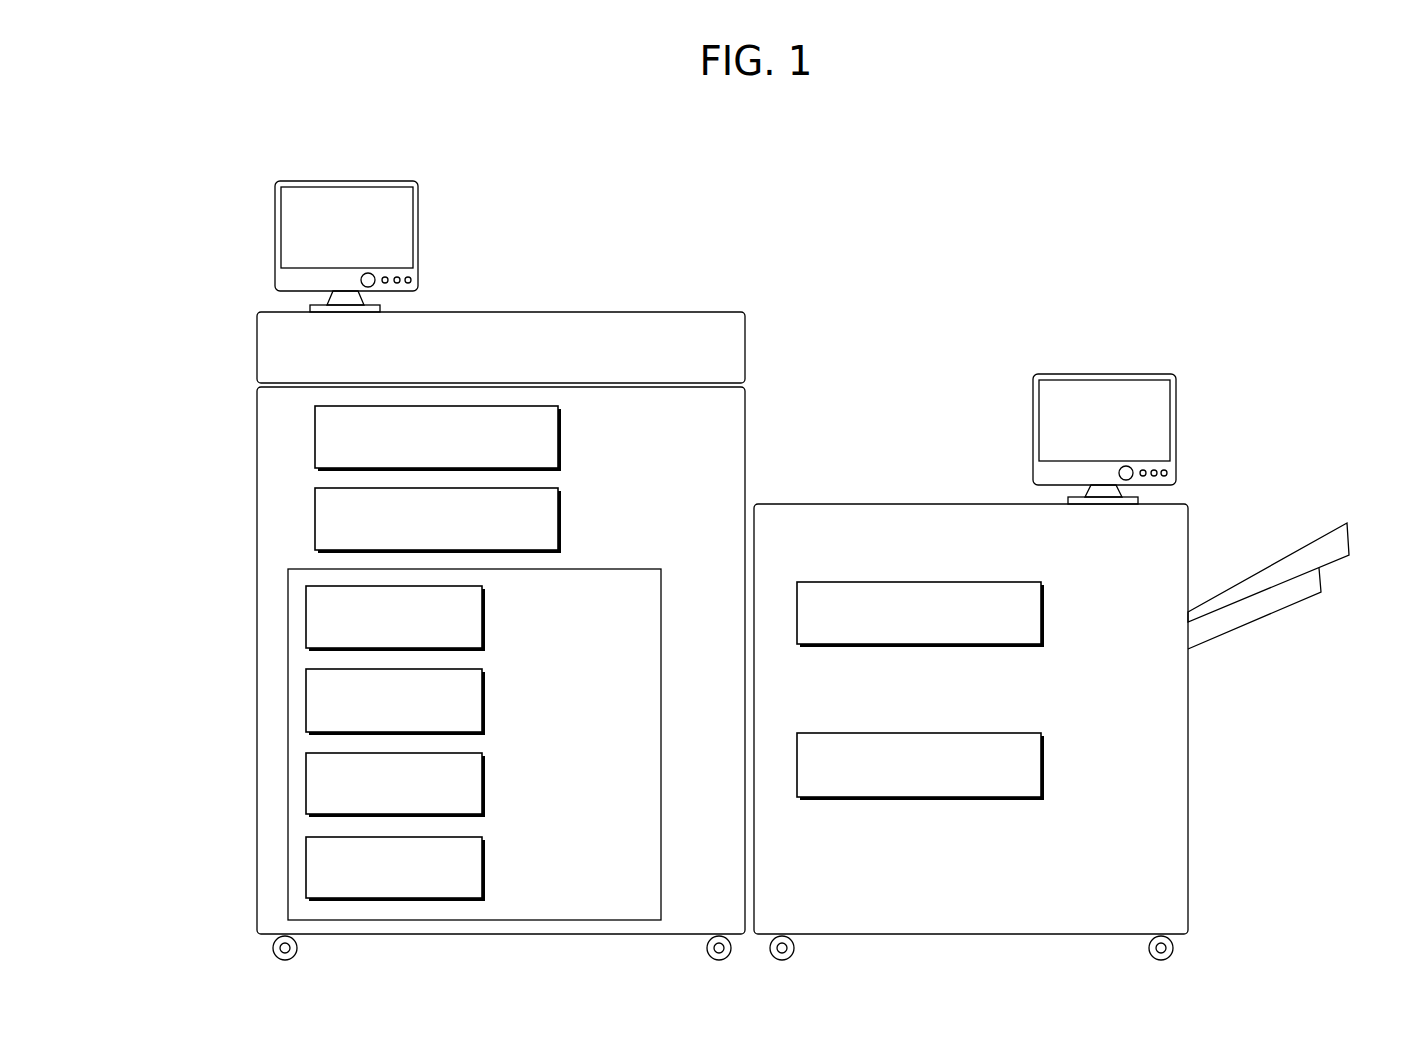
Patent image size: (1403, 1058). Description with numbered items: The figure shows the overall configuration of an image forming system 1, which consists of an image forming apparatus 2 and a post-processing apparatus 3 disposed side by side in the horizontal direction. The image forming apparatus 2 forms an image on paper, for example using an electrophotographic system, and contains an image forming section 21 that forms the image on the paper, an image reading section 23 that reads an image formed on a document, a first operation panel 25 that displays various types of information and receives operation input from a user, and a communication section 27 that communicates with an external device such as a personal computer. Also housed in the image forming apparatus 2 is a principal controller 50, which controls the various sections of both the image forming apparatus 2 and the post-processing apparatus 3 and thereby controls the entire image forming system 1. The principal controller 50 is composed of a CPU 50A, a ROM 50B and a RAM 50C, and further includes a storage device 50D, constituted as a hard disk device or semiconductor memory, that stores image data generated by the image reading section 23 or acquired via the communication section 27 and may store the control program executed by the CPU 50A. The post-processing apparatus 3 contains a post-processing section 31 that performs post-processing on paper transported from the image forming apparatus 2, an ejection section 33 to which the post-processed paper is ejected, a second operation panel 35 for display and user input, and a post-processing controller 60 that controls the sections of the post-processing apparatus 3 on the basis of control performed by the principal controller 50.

The image forming system 1 is at (1295, 138).
The image forming apparatus 2 is at (212, 176).
The post-processing apparatus 3 is at (1252, 321).
The image forming section 21 is at (560, 437).
The image reading section 23 is at (672, 312).
The first operation panel 25 is at (386, 181).
The communication section 27 is at (560, 517).
The post-processing section 31 is at (1043, 612).
The ejection section 33 is at (1313, 540).
The second operation panel 35 is at (1145, 374).
The principal controller 50 is at (662, 585).
The central processing unit 50A is at (484, 597).
The read only memory 50B is at (484, 683).
The random access memory 50C is at (484, 769).
The storage device 50D is at (484, 846).
The post-processing controller 60 is at (1043, 764).